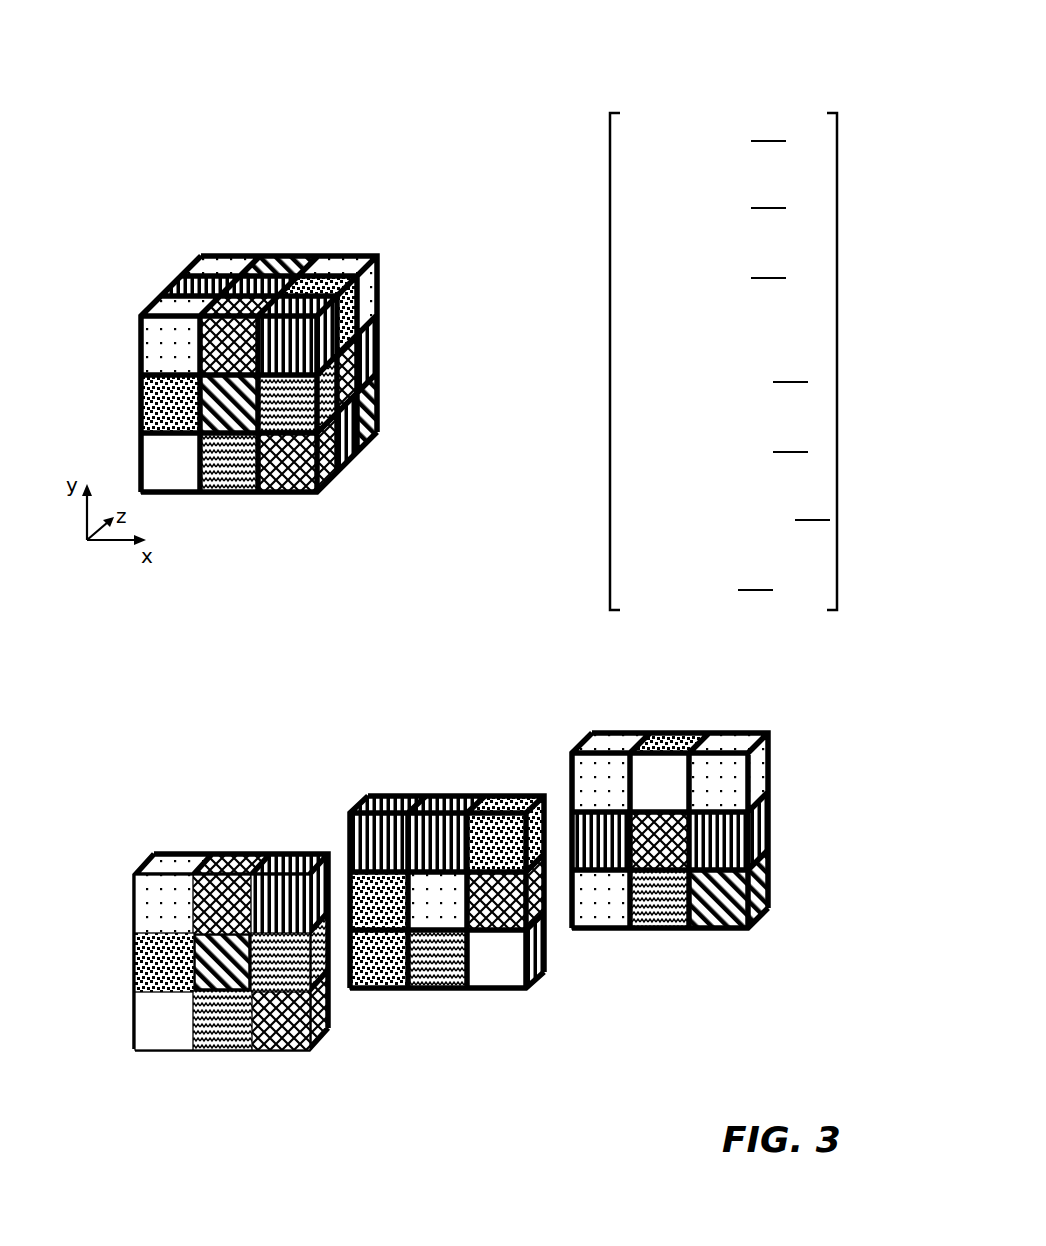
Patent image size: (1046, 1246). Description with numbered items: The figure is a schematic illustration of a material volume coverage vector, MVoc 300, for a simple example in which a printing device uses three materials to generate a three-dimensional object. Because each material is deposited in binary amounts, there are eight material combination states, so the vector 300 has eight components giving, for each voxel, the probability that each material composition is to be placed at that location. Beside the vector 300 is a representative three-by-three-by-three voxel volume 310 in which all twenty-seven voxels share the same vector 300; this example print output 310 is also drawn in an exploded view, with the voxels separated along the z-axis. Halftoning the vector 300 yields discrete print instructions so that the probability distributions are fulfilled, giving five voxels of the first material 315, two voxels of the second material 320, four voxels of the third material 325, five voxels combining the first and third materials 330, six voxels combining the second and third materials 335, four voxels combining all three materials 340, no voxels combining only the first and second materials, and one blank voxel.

The material volume coverage vector 300 is at (731, 61).
The voxel volume 310 is at (192, 232).
The voxels of the first material M1 315 is at (432, 912).
The voxels of the second material M2 320 is at (722, 910).
The voxels of the third material M3 325 is at (668, 848).
The voxels of the first and third materials in combination (M1M3) 330 is at (383, 967).
The voxels of the second and third materials in combination (M2M3) 335 is at (715, 845).
The voxels of all three materials in combination (M1M2M3) 340 is at (660, 900).